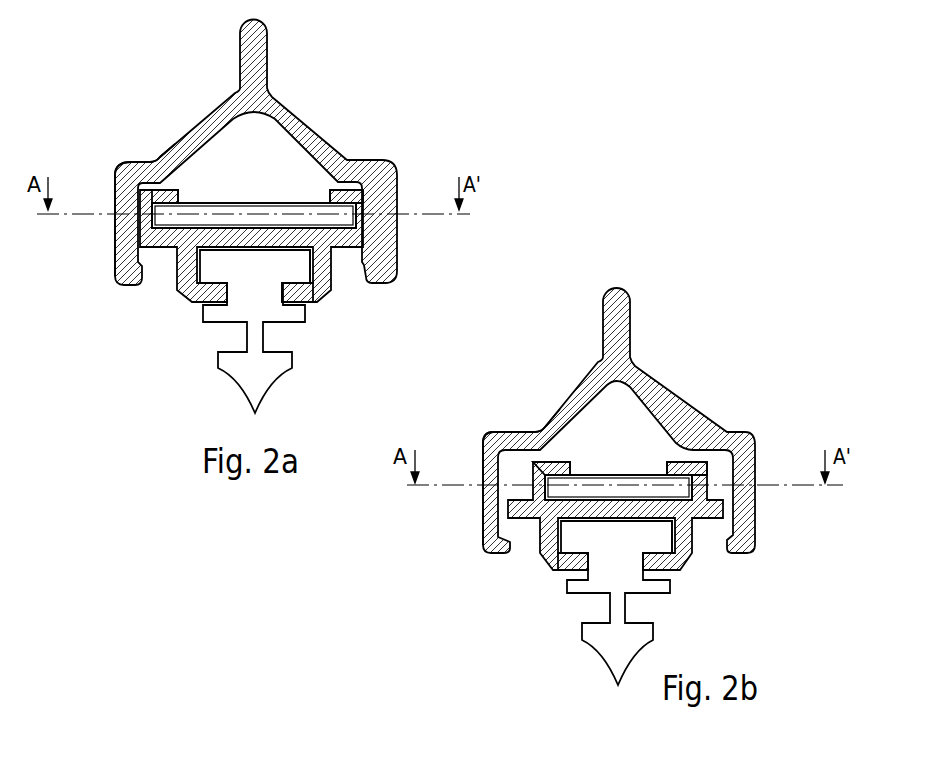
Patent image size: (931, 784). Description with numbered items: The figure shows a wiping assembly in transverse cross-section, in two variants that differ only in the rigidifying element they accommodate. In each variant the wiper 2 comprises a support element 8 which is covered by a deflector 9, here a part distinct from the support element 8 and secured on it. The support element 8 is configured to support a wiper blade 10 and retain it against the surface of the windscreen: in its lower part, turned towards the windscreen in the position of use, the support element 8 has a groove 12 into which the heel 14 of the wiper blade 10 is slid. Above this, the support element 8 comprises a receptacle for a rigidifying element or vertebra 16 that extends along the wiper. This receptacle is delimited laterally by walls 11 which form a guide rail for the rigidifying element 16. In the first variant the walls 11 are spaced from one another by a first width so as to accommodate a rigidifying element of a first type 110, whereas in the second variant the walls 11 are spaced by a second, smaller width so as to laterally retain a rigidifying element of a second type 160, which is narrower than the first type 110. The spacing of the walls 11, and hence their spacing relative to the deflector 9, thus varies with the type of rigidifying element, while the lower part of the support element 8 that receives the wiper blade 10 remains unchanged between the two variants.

In FIG. 2a, the wiper 2 is at (206, 109).
In FIG. 2b, the wiper 2 is at (571, 382).
In FIG. 2a, the support element 8 is at (345, 275).
In FIG. 2b, the support element 8 is at (530, 549).
In FIG. 2a, the deflector 9 is at (158, 168).
In FIG. 2b, the deflector 9 is at (523, 432).
In FIG. 2a, the wiper blade 10 is at (248, 368).
In FIG. 2b, the wiper blade 10 is at (615, 645).
In FIG. 2a, the walls 11 is at (143, 198).
In FIG. 2b, the walls 11 is at (535, 468).
In FIG. 2a, the groove 12 is at (313, 294).
In FIG. 2b, the groove 12 is at (558, 566).
In FIG. 2a, the heel 14 is at (218, 270).
In FIG. 2b, the heel 14 is at (653, 542).
In FIG. 2a, the rigidifying element 16 is at (254, 212).
In FIG. 2b, the rigidifying element 16 is at (622, 483).
In FIG. 2a, the rigidifying element of a first type 110 is at (254, 212).
In FIG. 2b, the rigidifying element of a second type 160 is at (622, 483).